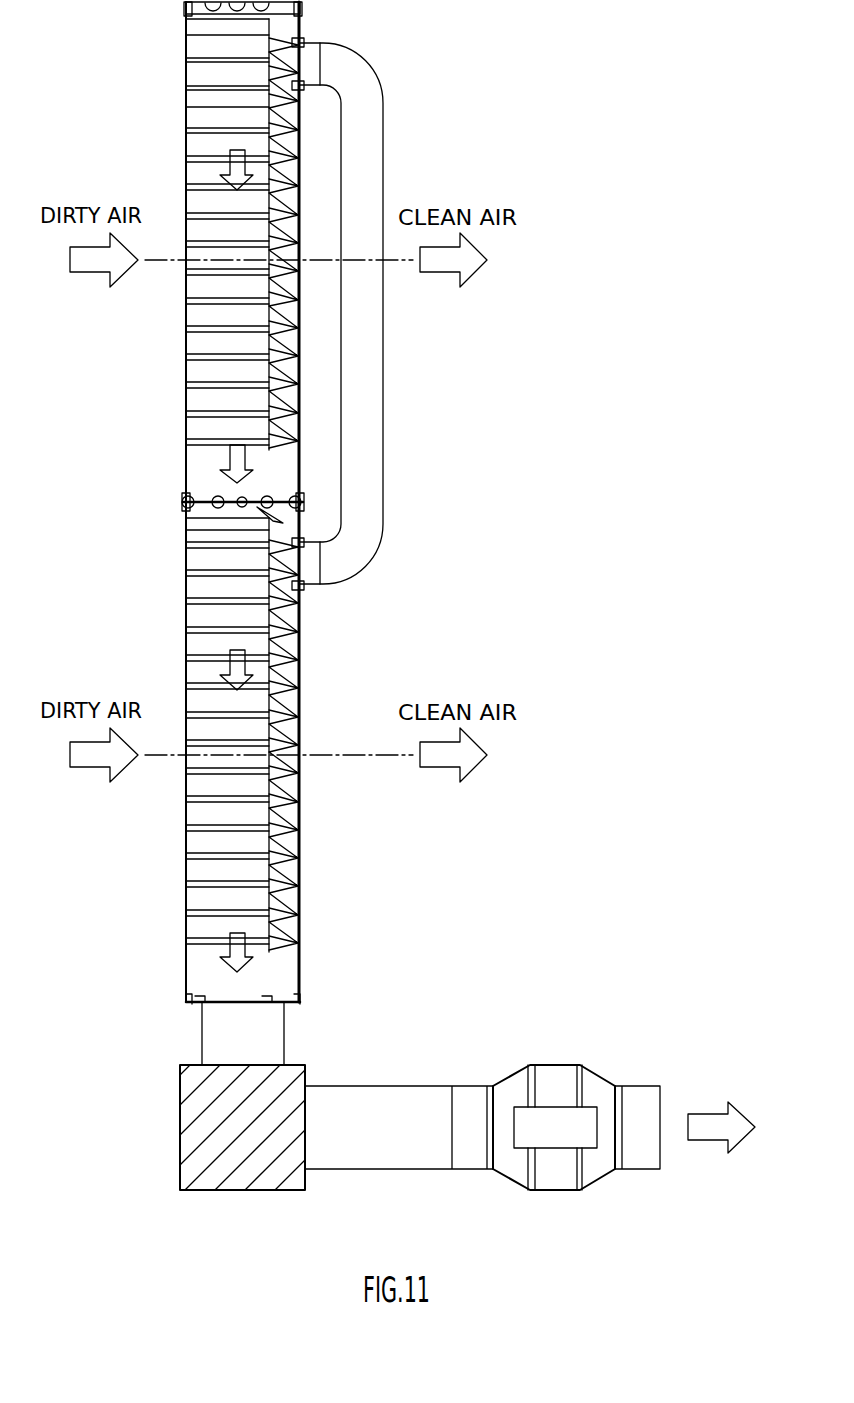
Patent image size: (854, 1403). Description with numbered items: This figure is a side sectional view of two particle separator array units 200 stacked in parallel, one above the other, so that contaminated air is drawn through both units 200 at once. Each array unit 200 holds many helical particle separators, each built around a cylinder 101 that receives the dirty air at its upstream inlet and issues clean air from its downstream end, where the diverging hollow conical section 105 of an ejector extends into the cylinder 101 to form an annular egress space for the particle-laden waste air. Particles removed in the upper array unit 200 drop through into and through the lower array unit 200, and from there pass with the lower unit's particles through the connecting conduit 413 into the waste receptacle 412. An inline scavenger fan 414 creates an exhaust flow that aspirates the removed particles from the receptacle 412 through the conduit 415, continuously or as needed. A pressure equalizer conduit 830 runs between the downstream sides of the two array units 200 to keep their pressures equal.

The particle separator array unit 200 is at (186, 42).
The cylinder 101 is at (197, 340).
The diverging hollow conical section 105 is at (290, 313).
The pressure equalizer conduit 830 is at (375, 427).
The waste receptacle 412 is at (180, 1128).
The connecting conduit 413 is at (286, 1040).
The inline scavenger fan 414 is at (553, 1065).
The conduit 415 is at (360, 1170).